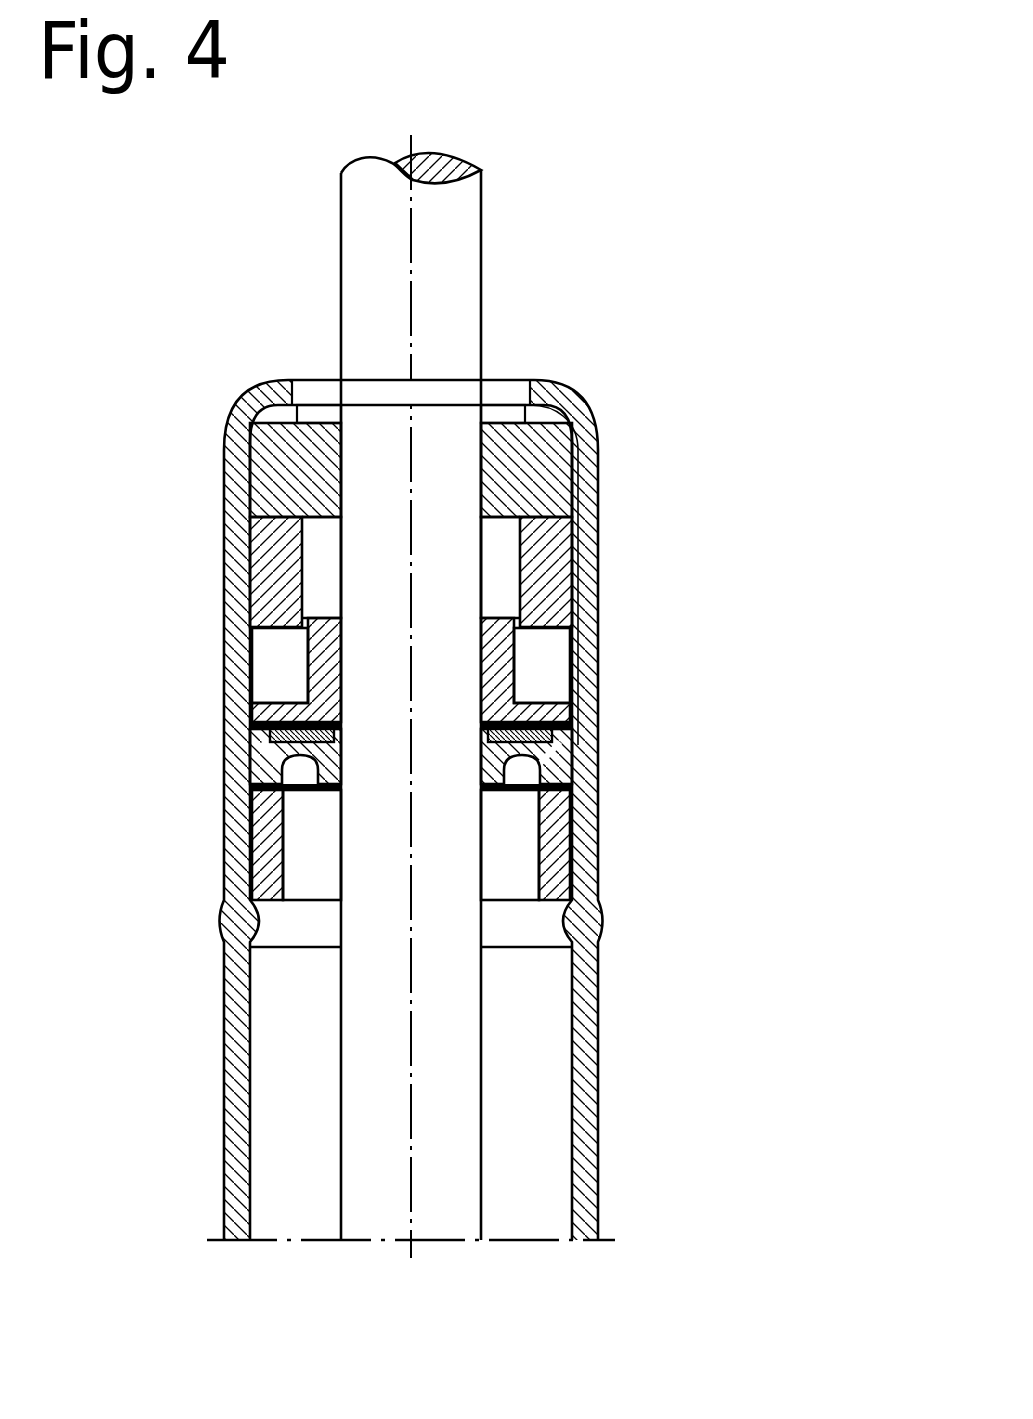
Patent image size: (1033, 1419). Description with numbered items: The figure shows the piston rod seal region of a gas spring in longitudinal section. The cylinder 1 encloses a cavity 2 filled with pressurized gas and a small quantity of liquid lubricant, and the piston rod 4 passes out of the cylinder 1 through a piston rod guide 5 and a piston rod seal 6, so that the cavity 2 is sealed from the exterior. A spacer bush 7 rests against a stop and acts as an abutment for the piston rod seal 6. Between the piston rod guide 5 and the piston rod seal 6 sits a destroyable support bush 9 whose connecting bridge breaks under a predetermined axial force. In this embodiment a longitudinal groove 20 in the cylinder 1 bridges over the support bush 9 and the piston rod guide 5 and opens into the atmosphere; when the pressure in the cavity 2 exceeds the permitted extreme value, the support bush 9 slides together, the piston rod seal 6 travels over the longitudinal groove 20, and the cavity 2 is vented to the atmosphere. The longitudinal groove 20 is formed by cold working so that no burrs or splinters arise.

The cylinder 1 is at (590, 1017).
The cavity 2 is at (535, 1143).
The piston rod 4 is at (451, 279).
The piston rod guide 5 is at (553, 475).
The piston rod seal 6 is at (558, 767).
The spacer bush 7 is at (557, 850).
The support bush 9 is at (558, 702).
The longitudinal groove 20 is at (573, 571).